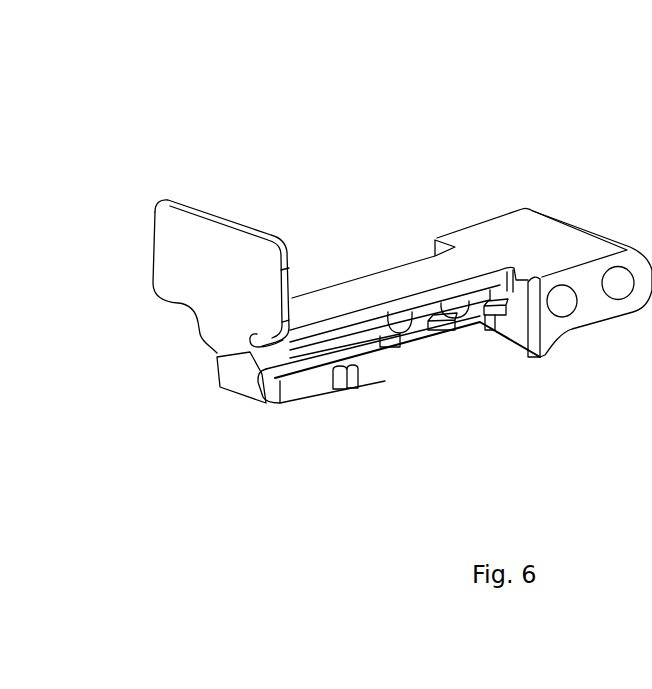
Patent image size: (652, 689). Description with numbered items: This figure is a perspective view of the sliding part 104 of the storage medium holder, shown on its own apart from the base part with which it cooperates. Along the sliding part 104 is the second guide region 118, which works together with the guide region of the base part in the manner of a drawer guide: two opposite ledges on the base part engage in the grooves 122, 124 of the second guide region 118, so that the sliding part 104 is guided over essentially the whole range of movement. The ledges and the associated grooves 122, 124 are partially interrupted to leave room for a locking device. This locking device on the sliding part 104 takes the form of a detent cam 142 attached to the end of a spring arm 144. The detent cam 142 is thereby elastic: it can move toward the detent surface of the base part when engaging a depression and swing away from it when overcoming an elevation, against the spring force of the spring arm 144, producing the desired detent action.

The sliding part 104 is at (388, 58).
The second guide region 118 is at (372, 351).
The groove 122 is at (258, 362).
The groove 124 is at (208, 335).
The detent cam 142 is at (345, 389).
The spring arm 144 is at (320, 380).